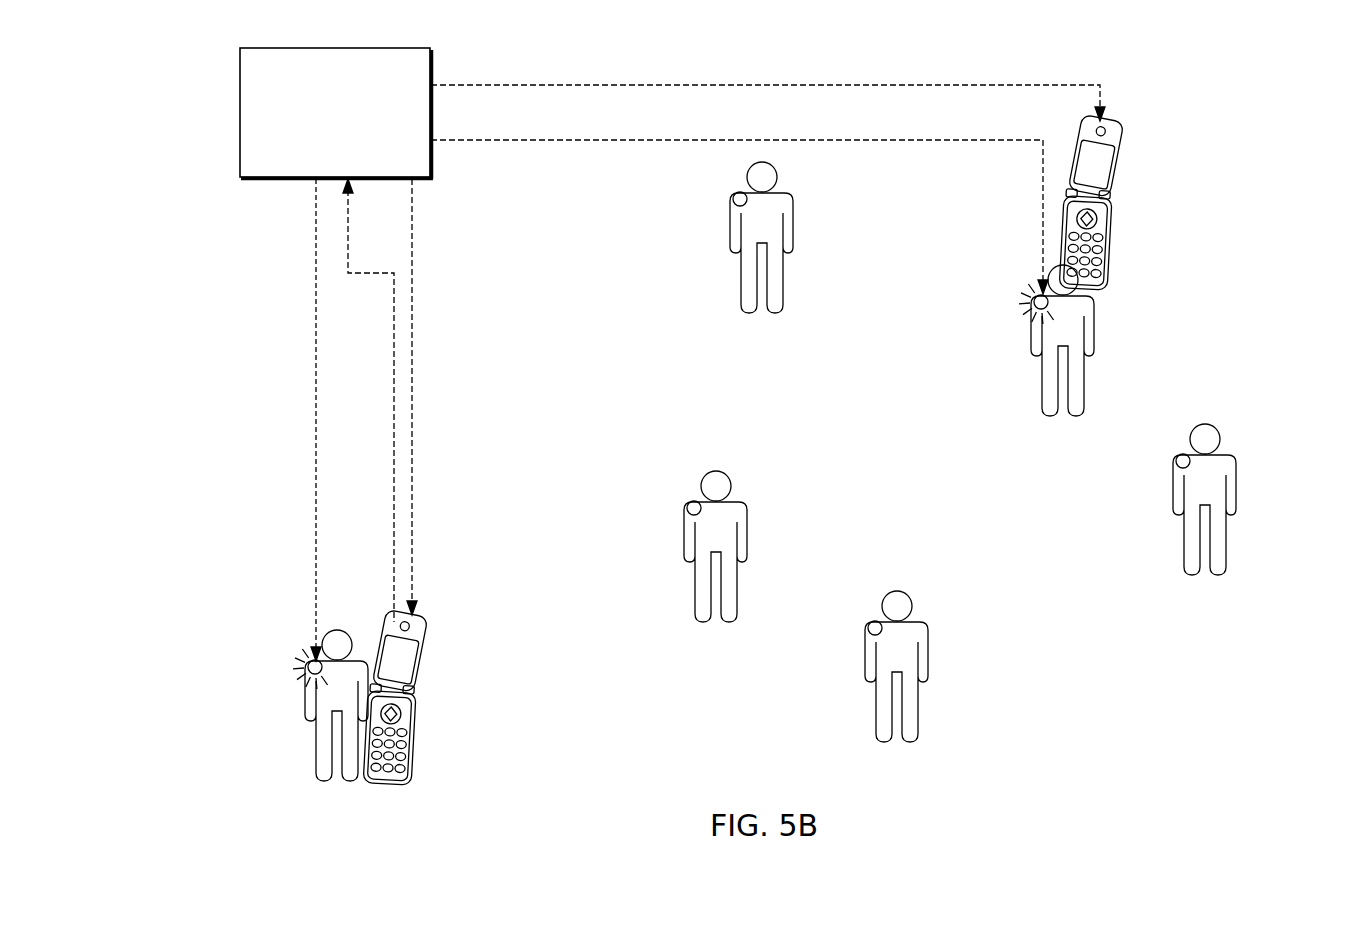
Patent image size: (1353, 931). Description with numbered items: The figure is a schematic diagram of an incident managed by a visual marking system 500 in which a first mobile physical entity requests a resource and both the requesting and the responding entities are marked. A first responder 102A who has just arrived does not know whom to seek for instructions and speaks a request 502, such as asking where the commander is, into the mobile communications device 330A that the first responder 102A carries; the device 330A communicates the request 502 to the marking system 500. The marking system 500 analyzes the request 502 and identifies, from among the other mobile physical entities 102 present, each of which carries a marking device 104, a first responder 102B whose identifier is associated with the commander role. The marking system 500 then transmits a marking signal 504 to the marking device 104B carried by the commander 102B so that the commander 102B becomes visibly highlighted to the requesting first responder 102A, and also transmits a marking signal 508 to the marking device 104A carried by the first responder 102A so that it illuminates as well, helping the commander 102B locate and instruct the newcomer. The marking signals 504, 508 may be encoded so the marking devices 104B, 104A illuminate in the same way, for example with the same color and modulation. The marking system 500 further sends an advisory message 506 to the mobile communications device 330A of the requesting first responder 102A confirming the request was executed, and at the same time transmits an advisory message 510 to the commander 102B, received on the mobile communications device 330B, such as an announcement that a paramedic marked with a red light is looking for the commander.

The visual marking system 500 is at (240, 112).
The request 502 is at (394, 446).
The marking signal 504 is at (736, 139).
The advisory message 506 is at (413, 397).
The marking signal 508 is at (316, 418).
The advisory message 510 is at (763, 84).
The mobile physical entity 102 is at (792, 206).
The marking device 104 is at (720, 198).
The first mobile physical entity 102A is at (312, 750).
The marking device 104A is at (292, 667).
The mobile communications device 330A is at (424, 658).
The second mobile physical entity 102B is at (1093, 311).
The marking device 104B is at (1017, 301).
The mobile communications device 330B is at (1121, 162).